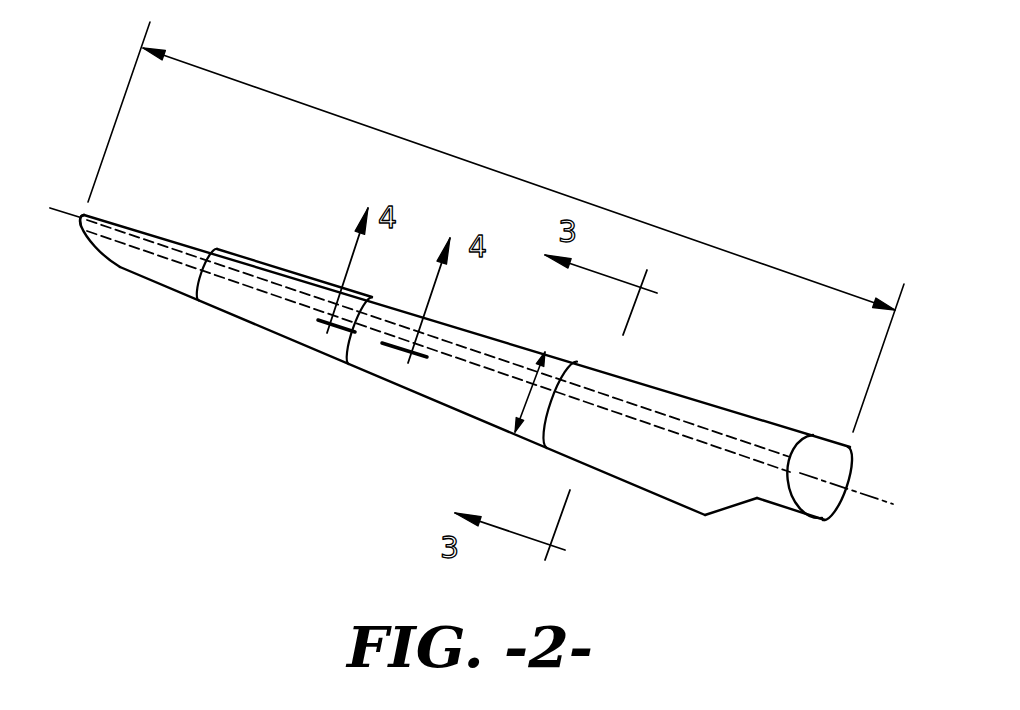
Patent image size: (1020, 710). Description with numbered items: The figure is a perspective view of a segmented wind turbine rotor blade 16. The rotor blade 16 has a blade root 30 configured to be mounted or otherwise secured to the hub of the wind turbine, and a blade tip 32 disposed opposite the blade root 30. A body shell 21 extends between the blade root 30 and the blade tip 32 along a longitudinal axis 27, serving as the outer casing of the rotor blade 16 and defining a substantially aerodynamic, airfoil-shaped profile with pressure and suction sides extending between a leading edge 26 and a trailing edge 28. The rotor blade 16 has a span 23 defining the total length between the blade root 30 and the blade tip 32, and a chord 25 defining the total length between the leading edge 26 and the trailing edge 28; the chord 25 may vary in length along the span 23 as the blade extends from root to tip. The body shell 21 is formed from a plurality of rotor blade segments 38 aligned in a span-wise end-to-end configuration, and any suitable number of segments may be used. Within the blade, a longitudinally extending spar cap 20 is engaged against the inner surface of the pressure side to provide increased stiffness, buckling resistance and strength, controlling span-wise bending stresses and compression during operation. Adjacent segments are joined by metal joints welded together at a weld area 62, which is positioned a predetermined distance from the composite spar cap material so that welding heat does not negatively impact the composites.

The rotor blade 16 is at (767, 178).
The spar cap 20 is at (455, 354).
The body shell 21 is at (280, 317).
The span 23 is at (415, 140).
The chord 25 is at (531, 391).
The leading edge 26 is at (732, 410).
The longitudinal axis 27 is at (63, 212).
The trailing edge 28 is at (663, 500).
The blade root 30 is at (807, 498).
The blade tip 32 is at (81, 219).
The rotor blade segments 38 is at (162, 228).
The weld area 62 is at (197, 280).